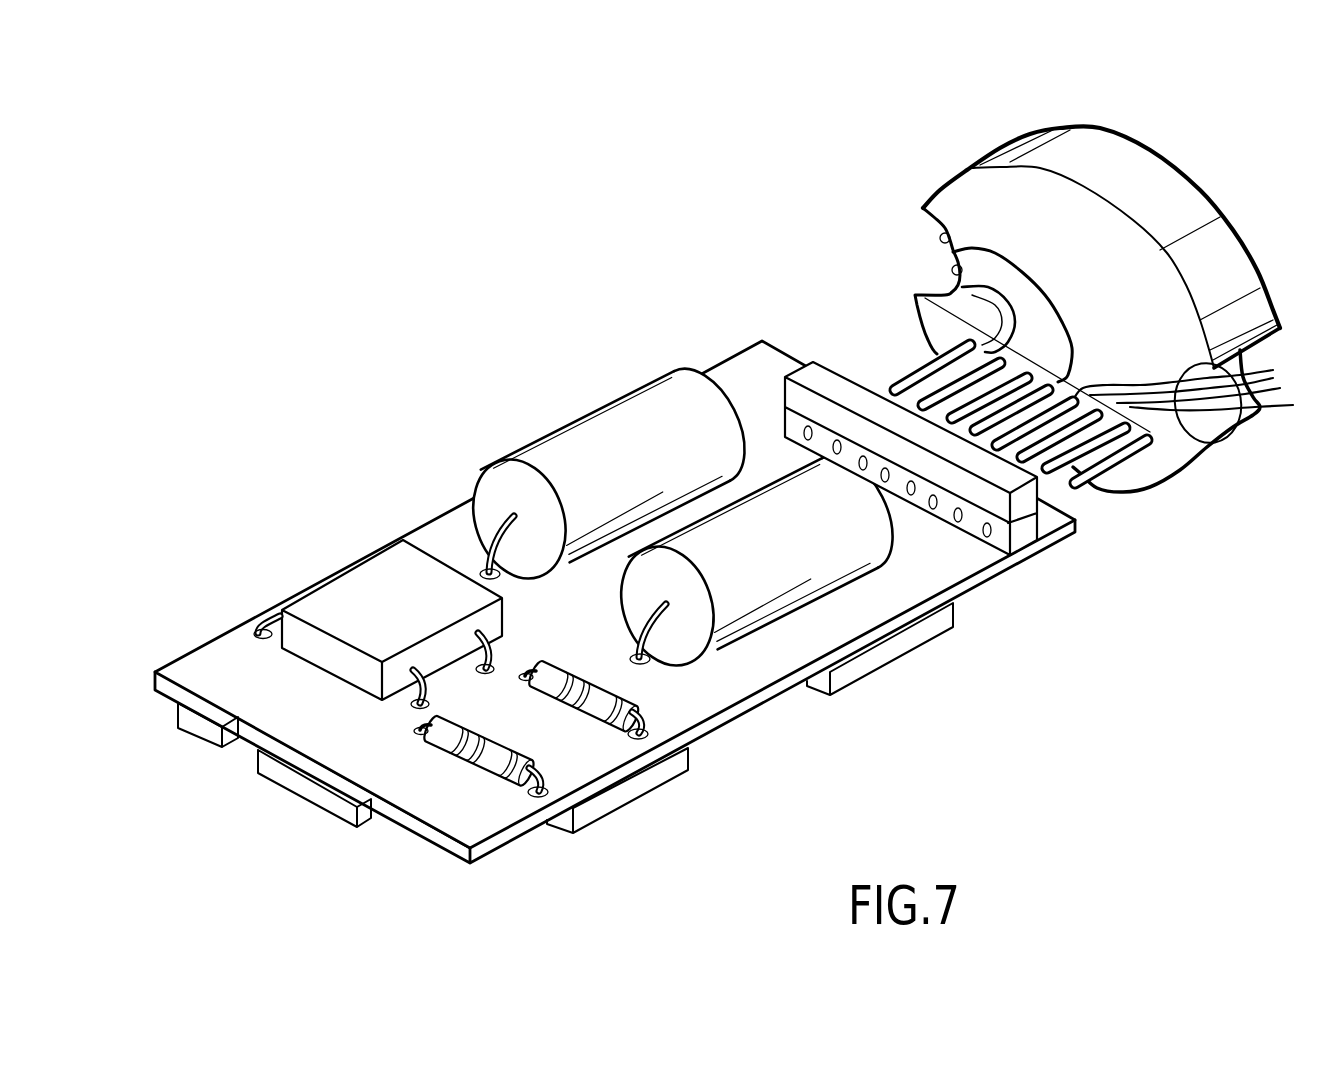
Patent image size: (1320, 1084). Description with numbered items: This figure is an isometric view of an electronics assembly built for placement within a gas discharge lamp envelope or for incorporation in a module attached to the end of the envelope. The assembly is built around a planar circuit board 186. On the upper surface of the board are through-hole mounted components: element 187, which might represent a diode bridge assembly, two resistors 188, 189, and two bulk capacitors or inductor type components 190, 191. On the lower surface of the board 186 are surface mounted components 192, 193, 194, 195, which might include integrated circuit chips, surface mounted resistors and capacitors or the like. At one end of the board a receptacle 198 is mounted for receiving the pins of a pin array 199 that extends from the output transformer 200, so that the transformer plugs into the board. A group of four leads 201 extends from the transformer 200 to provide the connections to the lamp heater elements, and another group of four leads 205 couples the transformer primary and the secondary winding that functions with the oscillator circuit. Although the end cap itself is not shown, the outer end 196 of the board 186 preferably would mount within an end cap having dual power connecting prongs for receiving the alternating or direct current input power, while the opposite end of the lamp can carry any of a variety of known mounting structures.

The circuit board 186 is at (433, 847).
The diode bridge assembly 187 is at (343, 603).
The resistor 188 is at (490, 775).
The resistor 189 is at (643, 712).
The bulk capacitor 190 is at (570, 440).
The bulk capacitor 191 is at (853, 555).
The surface mounted component 192 is at (203, 743).
The surface mounted component 193 is at (315, 803).
The surface mounted component 194 is at (637, 797).
The surface mounted component 195 is at (893, 663).
The outer end 196 is at (178, 682).
The receptacle 198 is at (807, 376).
The pin array 199 is at (890, 365).
The output transformer 200 is at (1104, 279).
The leads 201 is at (1280, 406).
The leads 205 is at (1020, 238).